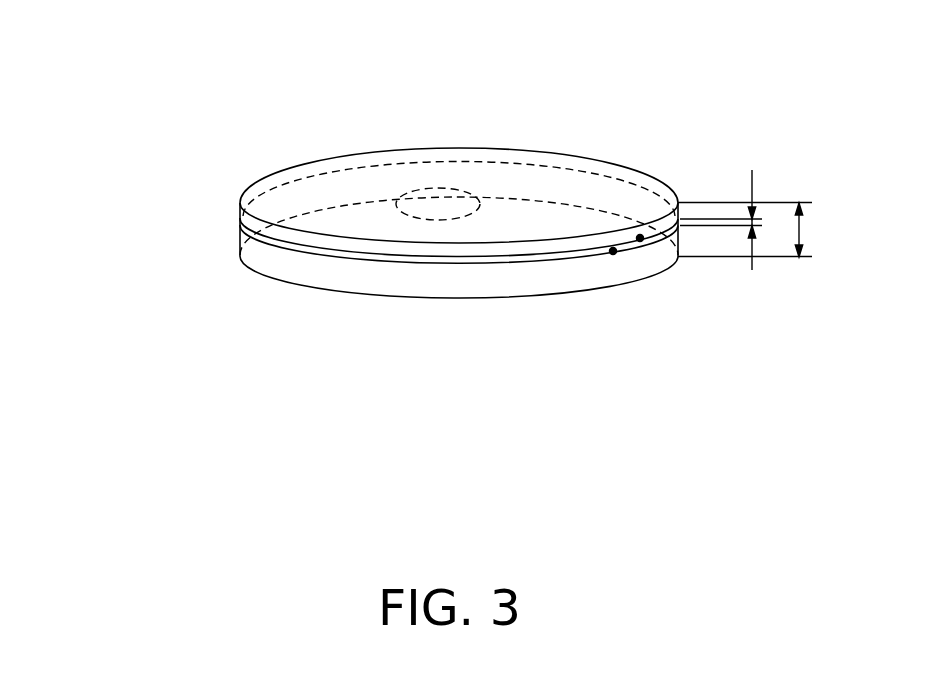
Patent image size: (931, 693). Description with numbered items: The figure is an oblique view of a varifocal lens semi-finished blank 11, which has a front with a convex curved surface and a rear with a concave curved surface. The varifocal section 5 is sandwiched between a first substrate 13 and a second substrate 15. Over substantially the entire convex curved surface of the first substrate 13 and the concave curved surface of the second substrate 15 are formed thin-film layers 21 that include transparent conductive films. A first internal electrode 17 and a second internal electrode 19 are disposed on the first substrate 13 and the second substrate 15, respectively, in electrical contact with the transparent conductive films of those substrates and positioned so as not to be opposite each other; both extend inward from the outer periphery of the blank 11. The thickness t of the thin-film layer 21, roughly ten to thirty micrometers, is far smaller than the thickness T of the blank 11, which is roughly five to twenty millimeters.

The varifocal section 5 is at (417, 188).
The varifocal lens semi-finished blank 11 is at (535, 100).
The first substrate 13 is at (239, 252).
The second substrate 15 is at (240, 218).
The first internal electrode 17 is at (616, 254).
The second internal electrode 19 is at (642, 241).
The thin-film layer 21 is at (242, 227).